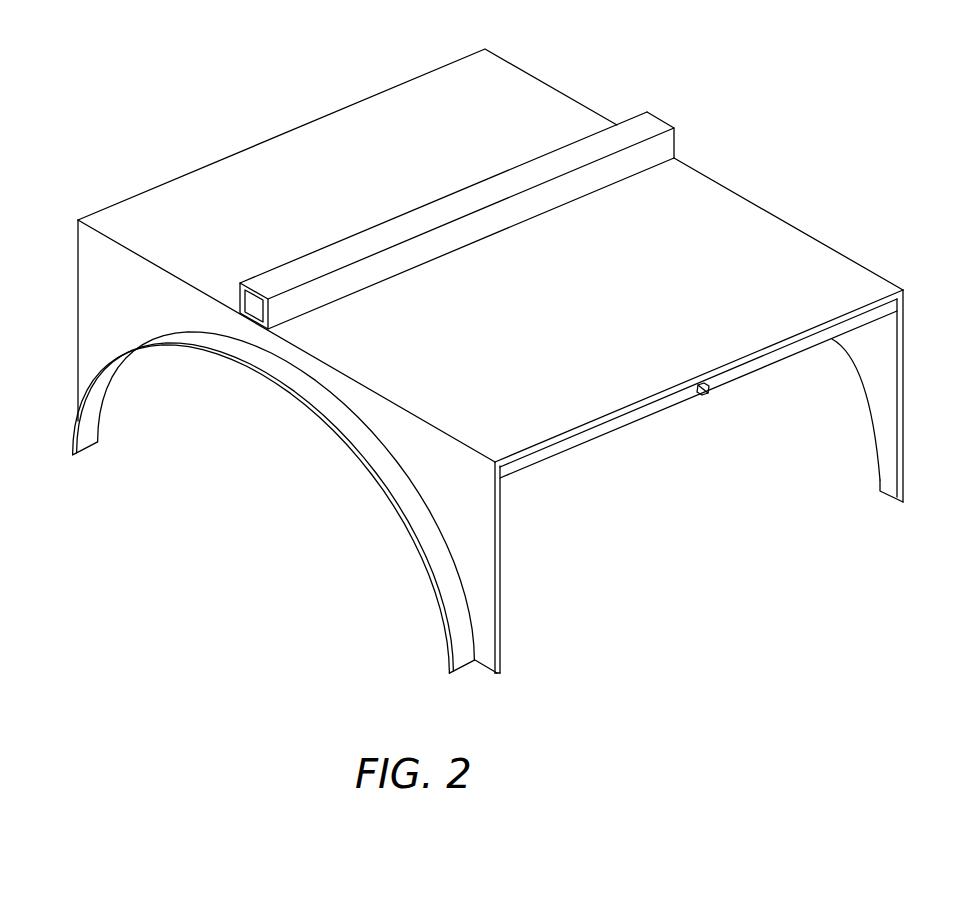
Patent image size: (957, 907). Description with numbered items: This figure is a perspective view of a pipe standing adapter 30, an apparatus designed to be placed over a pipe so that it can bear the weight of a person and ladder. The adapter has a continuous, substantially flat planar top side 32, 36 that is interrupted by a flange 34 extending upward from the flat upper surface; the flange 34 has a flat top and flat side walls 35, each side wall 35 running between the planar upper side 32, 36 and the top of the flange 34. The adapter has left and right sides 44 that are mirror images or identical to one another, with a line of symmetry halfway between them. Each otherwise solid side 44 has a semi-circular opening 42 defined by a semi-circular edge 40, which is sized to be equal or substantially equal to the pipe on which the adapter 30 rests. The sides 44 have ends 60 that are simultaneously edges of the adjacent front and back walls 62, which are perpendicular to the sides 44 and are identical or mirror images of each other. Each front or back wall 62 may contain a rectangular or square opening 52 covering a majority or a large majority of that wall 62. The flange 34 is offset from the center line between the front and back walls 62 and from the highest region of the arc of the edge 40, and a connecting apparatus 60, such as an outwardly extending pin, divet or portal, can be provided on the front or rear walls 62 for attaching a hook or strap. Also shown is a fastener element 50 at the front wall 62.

The pipe standing adapter 30 is at (163, 133).
The top side 32 is at (538, 86).
The flange 34 is at (655, 128).
The side wall of flange 35 is at (663, 156).
The top side 36 is at (767, 217).
The side 44 is at (100, 322).
The semi-circular opening 42 is at (203, 455).
The semi-circular edge 40 is at (93, 425).
The end 60 is at (498, 542).
The front/back wall 62 is at (596, 438).
The fastener 50 is at (700, 393).
The opening 52 is at (766, 462).